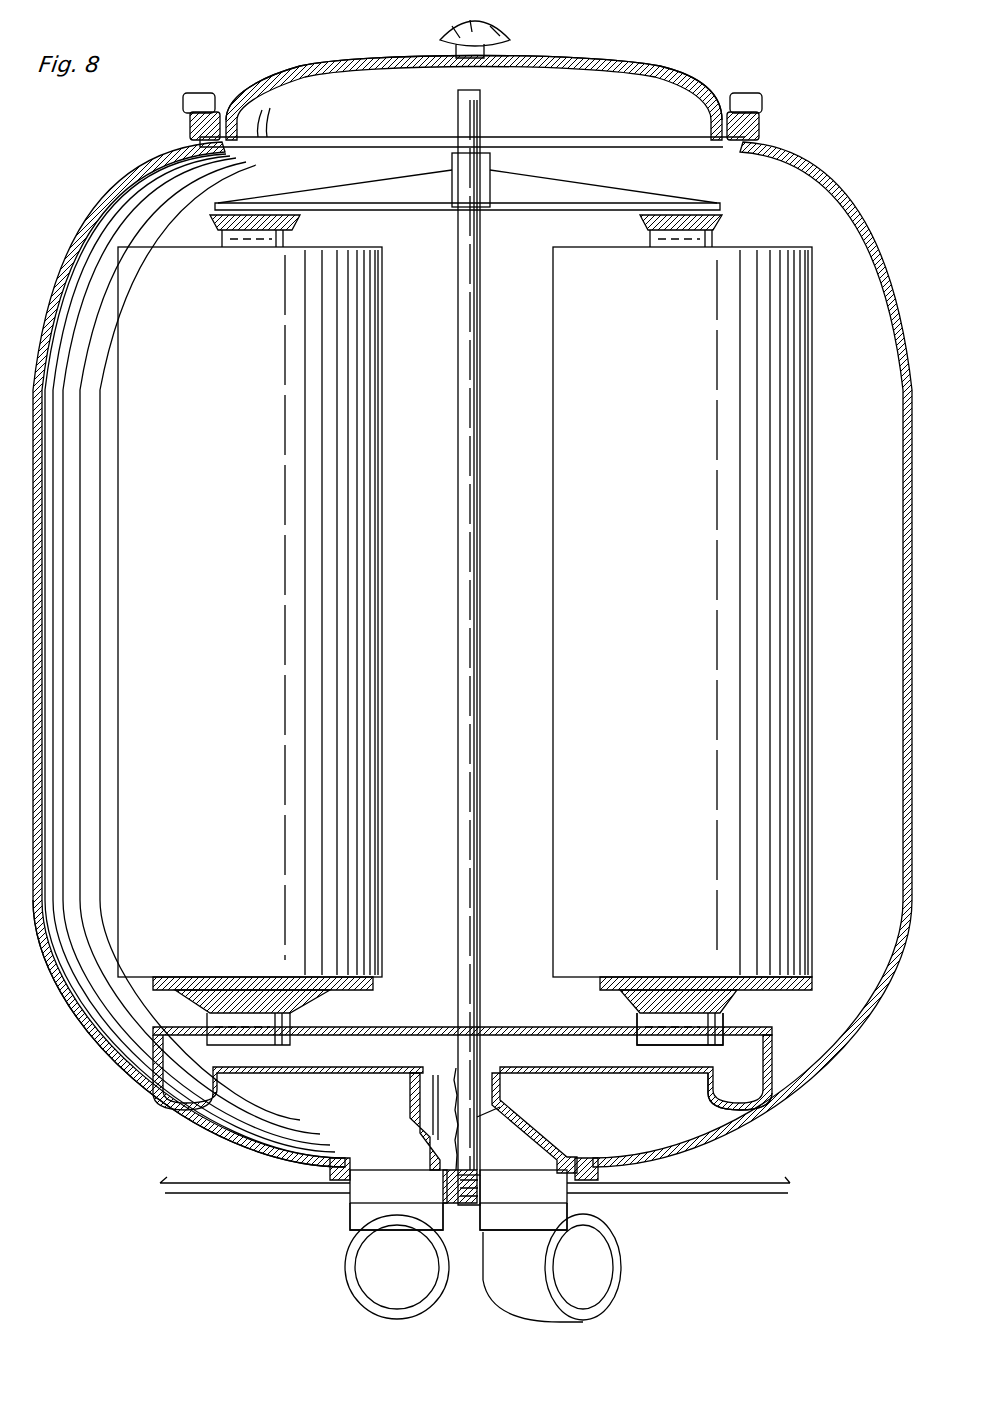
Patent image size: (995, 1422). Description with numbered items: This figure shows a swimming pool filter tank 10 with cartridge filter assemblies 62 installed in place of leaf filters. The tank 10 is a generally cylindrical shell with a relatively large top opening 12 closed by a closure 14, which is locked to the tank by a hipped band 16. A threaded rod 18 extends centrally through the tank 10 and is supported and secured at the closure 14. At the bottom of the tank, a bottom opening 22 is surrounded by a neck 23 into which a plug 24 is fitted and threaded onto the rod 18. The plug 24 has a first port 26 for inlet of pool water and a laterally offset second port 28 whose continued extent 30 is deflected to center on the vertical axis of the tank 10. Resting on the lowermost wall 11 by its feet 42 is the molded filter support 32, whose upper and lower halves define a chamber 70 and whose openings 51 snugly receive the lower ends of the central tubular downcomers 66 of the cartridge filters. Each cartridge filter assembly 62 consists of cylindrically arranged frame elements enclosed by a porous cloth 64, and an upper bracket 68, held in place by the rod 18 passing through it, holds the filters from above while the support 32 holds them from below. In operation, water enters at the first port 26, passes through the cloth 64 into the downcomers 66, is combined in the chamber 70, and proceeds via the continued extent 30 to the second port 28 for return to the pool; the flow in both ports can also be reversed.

The tank 10 is at (825, 150).
The lowermost wall 11 is at (282, 1145).
The top opening 12 is at (665, 100).
The closure 14 is at (305, 70).
The hipped band 16 is at (760, 116).
The threaded rod 18 is at (482, 262).
The bottom opening 22 is at (565, 1165).
The neck 23 is at (600, 1170).
The plug 24 is at (327, 1236).
The first port 26 is at (410, 1280).
The second port 28 is at (596, 1280).
The continued extent 30 is at (540, 1128).
The filter support 32 is at (236, 1113).
The feet 42 is at (762, 1100).
The openings 51 is at (650, 1025).
The cartridge filter assemblies 62 is at (375, 826).
The porous cloth 64 is at (300, 591).
The central tubular downcomer 66 is at (290, 1020).
The upper bracket 68 is at (400, 208).
The chamber 70 is at (388, 1066).